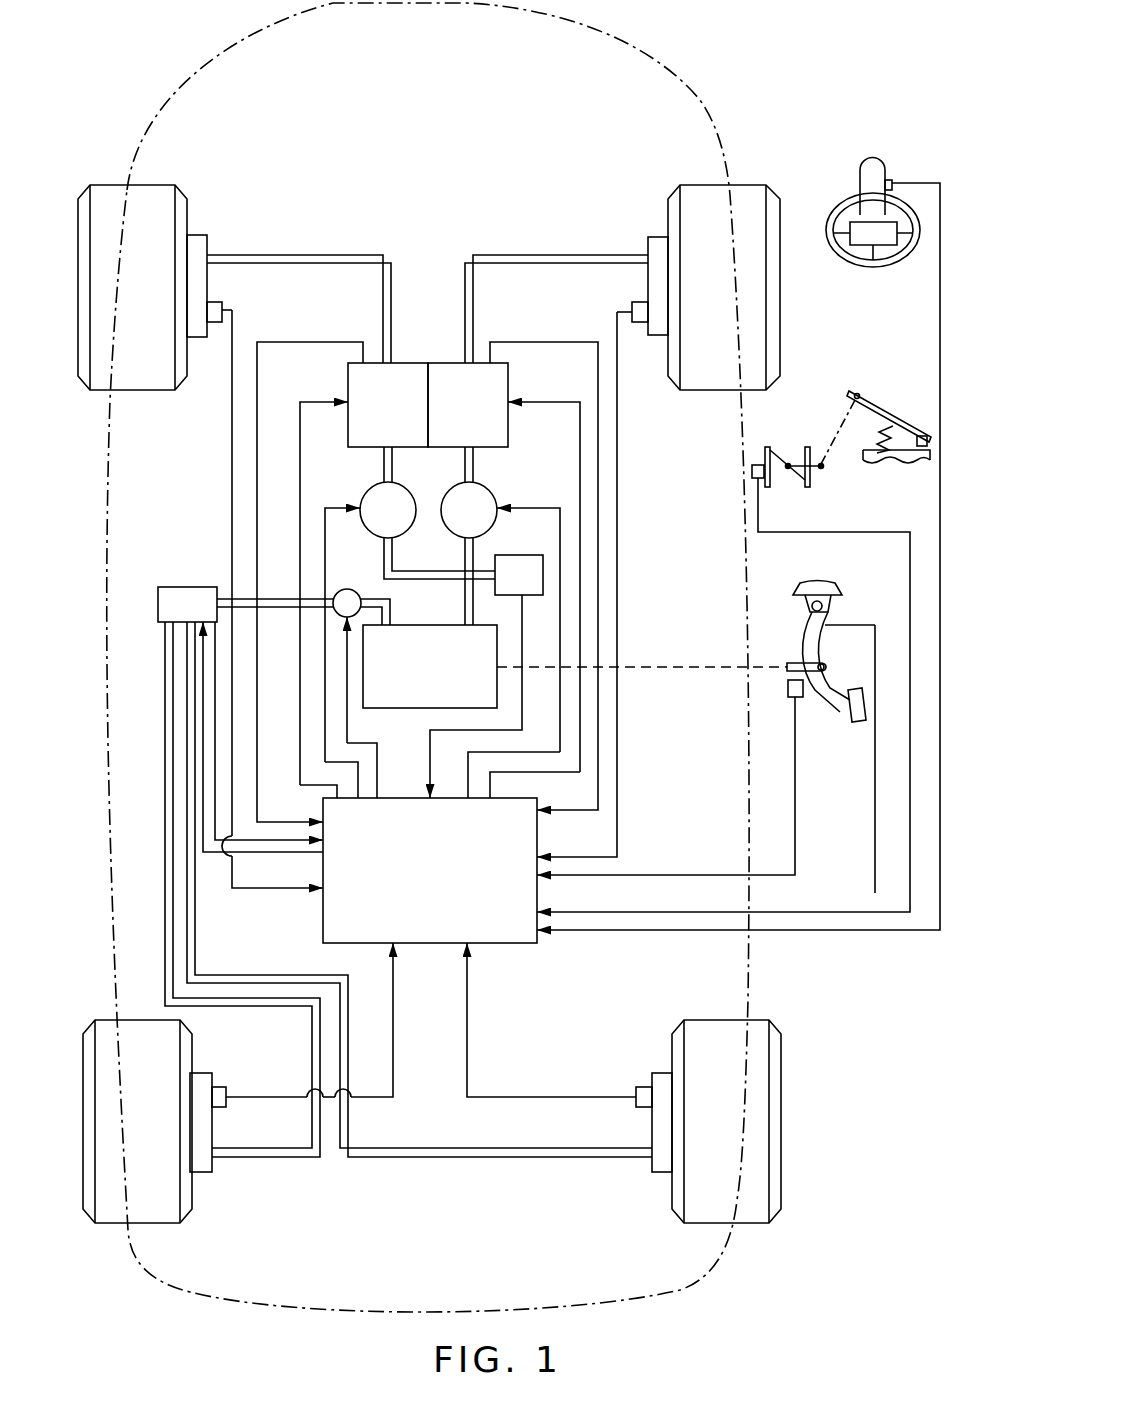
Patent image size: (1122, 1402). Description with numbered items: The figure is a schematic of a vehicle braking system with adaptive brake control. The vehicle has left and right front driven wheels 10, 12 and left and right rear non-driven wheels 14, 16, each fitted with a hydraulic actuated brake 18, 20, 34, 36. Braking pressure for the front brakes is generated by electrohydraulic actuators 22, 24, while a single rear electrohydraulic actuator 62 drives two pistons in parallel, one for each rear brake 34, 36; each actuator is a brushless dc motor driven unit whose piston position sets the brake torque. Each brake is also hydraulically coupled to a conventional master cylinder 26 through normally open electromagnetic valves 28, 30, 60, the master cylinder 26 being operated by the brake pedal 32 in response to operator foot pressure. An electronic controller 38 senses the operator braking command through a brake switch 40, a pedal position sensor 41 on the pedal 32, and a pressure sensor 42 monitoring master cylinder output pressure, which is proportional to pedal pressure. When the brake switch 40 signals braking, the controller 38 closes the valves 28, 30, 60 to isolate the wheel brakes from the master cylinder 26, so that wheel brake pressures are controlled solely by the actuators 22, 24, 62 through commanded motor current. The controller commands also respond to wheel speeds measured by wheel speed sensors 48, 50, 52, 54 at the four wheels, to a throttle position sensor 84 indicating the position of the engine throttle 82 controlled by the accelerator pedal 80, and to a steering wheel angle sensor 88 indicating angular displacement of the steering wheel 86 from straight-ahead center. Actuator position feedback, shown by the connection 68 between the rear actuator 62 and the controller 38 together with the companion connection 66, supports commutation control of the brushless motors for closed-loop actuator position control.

The left front driven wheel 10 is at (100, 195).
The right front driven wheel 12 is at (745, 192).
The left rear non-driven wheel 14 is at (103, 1033).
The right rear non-driven wheel 16 is at (760, 1040).
The hydraulic actuated brake 18 is at (200, 240).
The hydraulic actuated brake 20 is at (656, 245).
The electrohydraulic actuator 22 is at (400, 372).
The electrohydraulic actuator 24 is at (455, 378).
The master cylinder 26 is at (445, 625).
The electromagnetic valve 28 is at (372, 496).
The electromagnetic valve 30 is at (487, 496).
The brake pedal 32 is at (850, 759).
The hydraulic actuated brake 34 is at (200, 1162).
The hydraulic actuated brake 36 is at (661, 1163).
The electronic controller 38 is at (445, 945).
The brake switch 40 is at (830, 620).
The pedal position sensor 41 is at (795, 700).
The pressure sensor 42 is at (522, 558).
The wheel speed sensor 48 is at (215, 322).
The wheel speed sensor 50 is at (640, 322).
The wheel speed sensor 52 is at (222, 1100).
The wheel speed sensor 54 is at (640, 1088).
The electromagnetic valve 60 is at (347, 588).
The electrohydraulic actuator 62 is at (178, 588).
The actuator feedback line 66 is at (218, 712).
The actuator 68 is at (203, 677).
The accelerator pedal 80 is at (882, 407).
The engine throttle 82 is at (792, 457).
The throttle position sensor 84 is at (757, 465).
The steering wheel 86 is at (848, 212).
The steering wheel angle sensor 88 is at (892, 180).